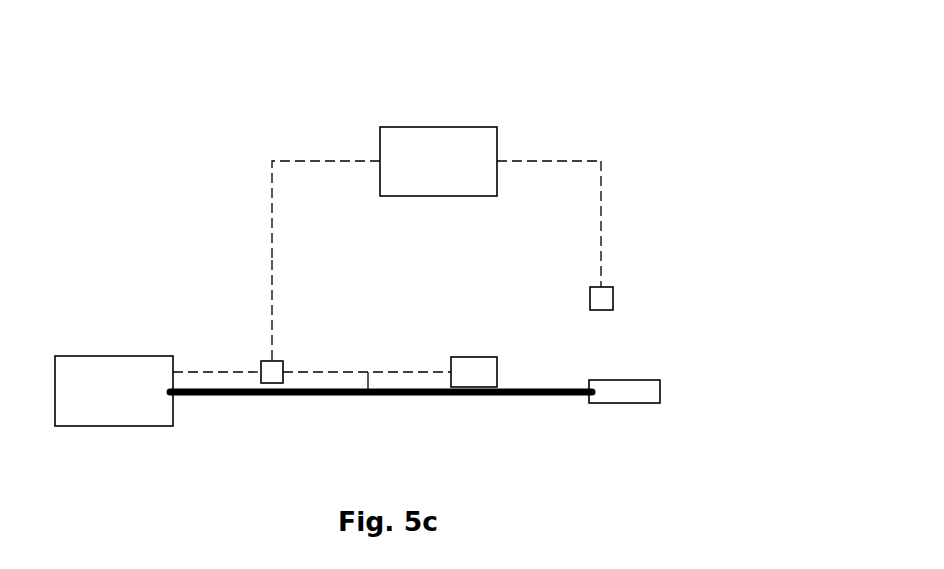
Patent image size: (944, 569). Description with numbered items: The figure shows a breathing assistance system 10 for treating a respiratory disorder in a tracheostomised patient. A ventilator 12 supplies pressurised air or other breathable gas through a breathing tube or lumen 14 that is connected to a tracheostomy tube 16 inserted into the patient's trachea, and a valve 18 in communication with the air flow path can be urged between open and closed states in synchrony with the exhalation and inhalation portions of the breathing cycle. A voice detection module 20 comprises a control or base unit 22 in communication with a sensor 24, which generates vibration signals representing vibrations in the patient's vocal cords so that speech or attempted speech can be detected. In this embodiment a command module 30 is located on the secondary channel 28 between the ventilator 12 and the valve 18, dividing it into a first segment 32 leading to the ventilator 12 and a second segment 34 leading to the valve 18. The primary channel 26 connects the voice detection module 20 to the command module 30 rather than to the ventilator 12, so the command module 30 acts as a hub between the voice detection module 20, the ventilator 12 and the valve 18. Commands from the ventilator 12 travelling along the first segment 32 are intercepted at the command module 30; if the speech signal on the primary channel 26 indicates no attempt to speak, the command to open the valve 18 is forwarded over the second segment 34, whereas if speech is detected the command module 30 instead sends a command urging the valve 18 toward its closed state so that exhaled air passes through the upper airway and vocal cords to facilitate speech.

The breathing assistance system 10 is at (92, 70).
The ventilator 12 is at (75, 356).
The breathing tube or lumen 14 is at (272, 397).
The tracheostomy tube 16 is at (622, 404).
The valve 18 is at (472, 357).
The voice detection module 20 is at (530, 94).
The control or base unit 22 is at (412, 127).
The sensor 24 is at (590, 287).
The primary channel 26 is at (310, 159).
The secondary channel 28 is at (304, 278).
The command module 30 is at (280, 356).
The first segment 32 is at (205, 371).
The second segment 34 is at (368, 397).